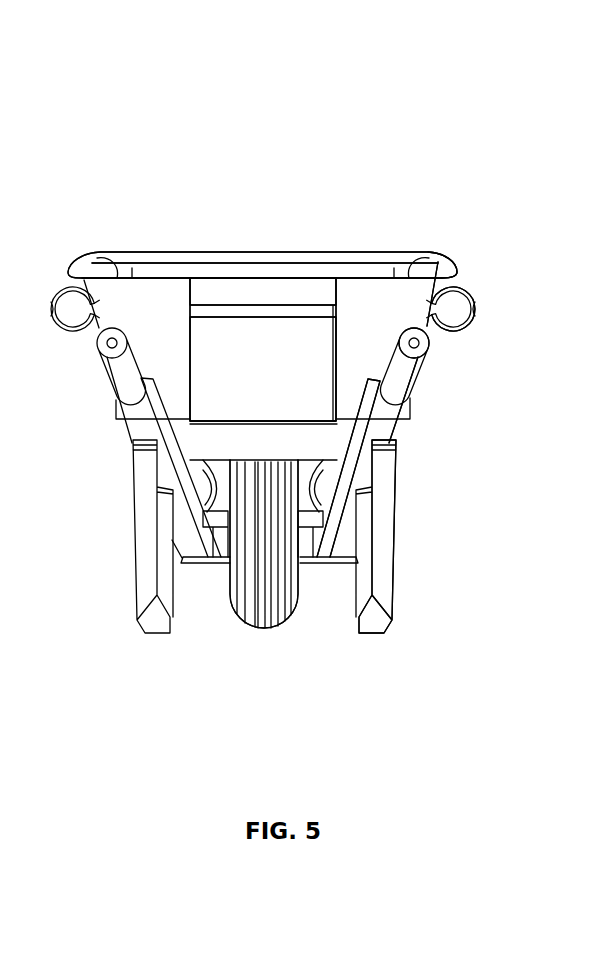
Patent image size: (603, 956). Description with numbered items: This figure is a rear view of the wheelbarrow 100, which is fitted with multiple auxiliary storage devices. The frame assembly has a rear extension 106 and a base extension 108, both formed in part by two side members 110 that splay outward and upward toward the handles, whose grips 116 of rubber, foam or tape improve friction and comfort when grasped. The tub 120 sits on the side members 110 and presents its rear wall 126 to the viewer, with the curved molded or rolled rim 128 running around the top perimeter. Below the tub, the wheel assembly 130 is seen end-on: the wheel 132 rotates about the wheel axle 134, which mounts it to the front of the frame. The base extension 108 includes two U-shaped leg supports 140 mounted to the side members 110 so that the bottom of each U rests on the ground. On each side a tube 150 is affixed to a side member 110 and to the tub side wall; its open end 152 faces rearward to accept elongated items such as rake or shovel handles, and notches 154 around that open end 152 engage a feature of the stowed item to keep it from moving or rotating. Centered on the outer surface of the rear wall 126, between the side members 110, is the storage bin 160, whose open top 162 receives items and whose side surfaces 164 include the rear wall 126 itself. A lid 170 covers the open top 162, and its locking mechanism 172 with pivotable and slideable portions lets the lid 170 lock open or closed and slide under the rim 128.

The wheelbarrow 100 is at (503, 89).
The rear extension 106 is at (514, 396).
The base extension 108 is at (469, 472).
The side member 110 is at (138, 433).
The grip 116 is at (121, 371).
The tub 120 is at (269, 203).
The rear wall 126 is at (360, 293).
The rim 128 is at (438, 263).
The wheel assembly 130 is at (221, 657).
The wheel 132 is at (259, 630).
The wheel axle 134 is at (309, 523).
The leg support 140 is at (148, 573).
The tube 150 is at (94, 362).
The open end 152 is at (45, 276).
The notch 154 is at (34, 316).
The storage bin 160 is at (170, 233).
The open top 162 is at (286, 275).
The side surface 164 is at (157, 292).
The lid 170 is at (207, 388).
The locking mechanism 172 is at (170, 306).